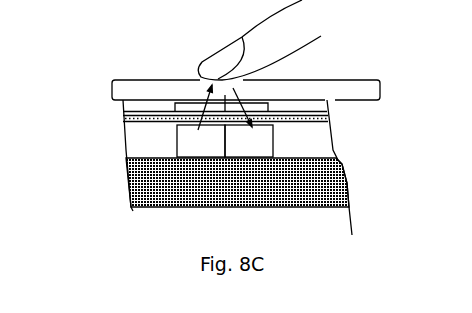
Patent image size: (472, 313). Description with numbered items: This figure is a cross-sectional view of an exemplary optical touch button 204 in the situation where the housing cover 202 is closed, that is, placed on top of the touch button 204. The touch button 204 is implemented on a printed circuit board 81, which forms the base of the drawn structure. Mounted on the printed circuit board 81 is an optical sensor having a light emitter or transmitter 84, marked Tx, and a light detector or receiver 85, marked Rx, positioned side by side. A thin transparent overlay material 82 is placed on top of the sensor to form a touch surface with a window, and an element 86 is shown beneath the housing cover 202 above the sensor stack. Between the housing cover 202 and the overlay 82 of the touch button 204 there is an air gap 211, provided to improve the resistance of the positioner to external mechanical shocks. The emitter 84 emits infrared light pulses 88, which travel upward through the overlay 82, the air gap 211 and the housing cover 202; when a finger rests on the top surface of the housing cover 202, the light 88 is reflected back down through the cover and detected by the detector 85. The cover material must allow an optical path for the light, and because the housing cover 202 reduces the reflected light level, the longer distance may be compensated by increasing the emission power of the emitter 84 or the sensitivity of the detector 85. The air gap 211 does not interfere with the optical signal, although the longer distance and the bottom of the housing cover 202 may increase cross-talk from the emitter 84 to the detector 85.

The IR light pulses 88 is at (207, 90).
The housing cover 202 is at (328, 79).
The optical touch button 204 is at (115, 125).
The air gap 211 is at (138, 103).
The electrode element 86 is at (190, 104).
The transparent overlay material 82 is at (327, 117).
The light emitter or transmitter (Tx) 84 is at (177, 142).
The light detector or receiver (Rx) 85 is at (273, 138).
The printed circuit board (PCB) 81 is at (148, 193).